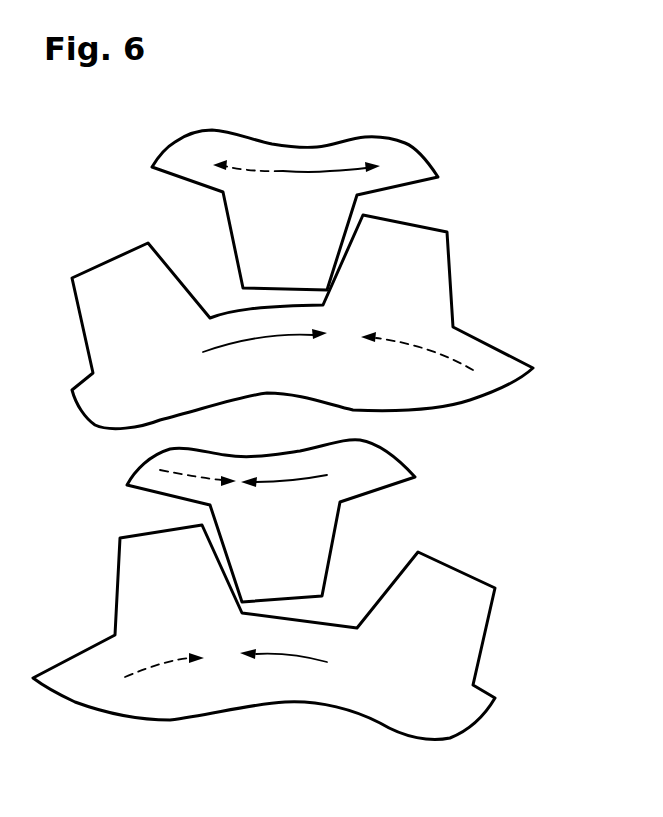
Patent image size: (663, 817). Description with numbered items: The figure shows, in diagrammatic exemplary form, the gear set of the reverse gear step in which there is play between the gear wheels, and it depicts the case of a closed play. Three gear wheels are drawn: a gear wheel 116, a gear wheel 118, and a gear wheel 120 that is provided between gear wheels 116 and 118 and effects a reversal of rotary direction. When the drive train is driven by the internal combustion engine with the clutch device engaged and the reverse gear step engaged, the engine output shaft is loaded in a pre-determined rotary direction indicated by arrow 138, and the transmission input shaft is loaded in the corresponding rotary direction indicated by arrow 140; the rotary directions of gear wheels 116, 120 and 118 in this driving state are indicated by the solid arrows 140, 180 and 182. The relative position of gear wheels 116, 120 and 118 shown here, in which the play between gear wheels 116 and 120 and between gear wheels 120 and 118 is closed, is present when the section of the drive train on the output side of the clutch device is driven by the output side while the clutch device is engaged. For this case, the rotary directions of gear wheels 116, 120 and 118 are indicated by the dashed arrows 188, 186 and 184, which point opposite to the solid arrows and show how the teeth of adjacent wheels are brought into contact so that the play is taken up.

The gear wheel 116 is at (393, 163).
The gear wheel 118 is at (457, 642).
The gear wheel 120 is at (497, 370).
The arrow 138 is at (300, 171).
The arrow 140 is at (338, 170).
The arrow 180 is at (233, 343).
The arrow 182 is at (297, 660).
The dashed arrow 184 is at (160, 665).
The dashed arrow 186 is at (440, 353).
The dashed arrow 188 is at (246, 166).